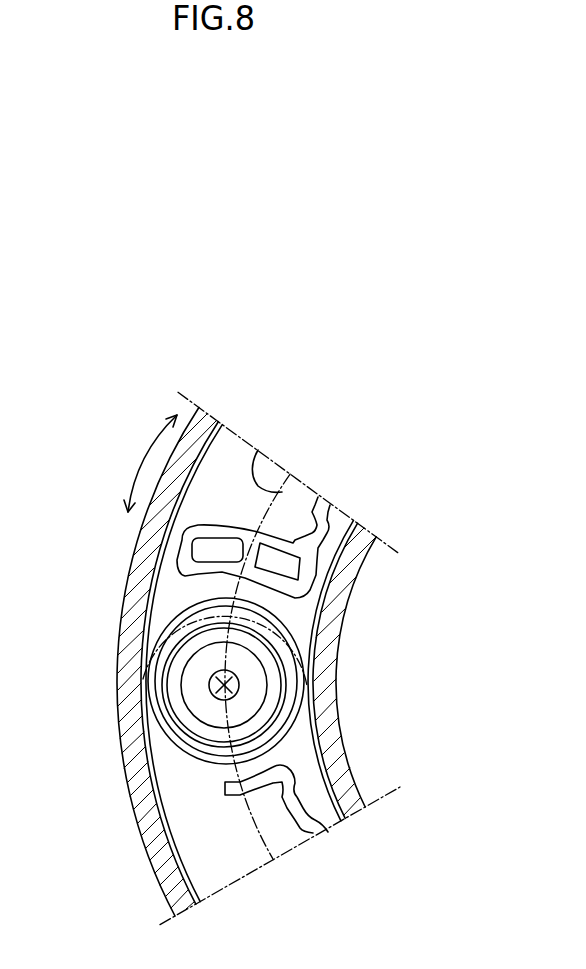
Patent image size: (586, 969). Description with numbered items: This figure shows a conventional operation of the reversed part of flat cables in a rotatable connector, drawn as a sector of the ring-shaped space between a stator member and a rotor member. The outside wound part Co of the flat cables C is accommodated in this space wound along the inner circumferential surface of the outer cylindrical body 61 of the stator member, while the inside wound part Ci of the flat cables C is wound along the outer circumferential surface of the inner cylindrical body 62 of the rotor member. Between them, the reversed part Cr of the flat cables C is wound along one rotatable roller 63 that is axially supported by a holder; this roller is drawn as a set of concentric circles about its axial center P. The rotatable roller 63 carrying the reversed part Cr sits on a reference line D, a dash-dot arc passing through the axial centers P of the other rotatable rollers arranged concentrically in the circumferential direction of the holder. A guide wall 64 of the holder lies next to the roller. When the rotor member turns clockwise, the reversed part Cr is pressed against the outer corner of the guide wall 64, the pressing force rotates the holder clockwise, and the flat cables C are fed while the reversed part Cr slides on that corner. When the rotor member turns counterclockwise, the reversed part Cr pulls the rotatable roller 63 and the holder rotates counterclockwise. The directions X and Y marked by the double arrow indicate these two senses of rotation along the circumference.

The outer cylindrical body 61 is at (135, 817).
The inner cylindrical body 62 is at (343, 745).
The rotatable roller 63 is at (152, 688).
The guide wall 64 is at (183, 550).
The flat cables C is at (153, 632).
The reversed part Cr is at (190, 590).
The inside wound part Ci is at (315, 717).
The outside wound part Co is at (146, 737).
The reference line D is at (259, 449).
The axial center P is at (226, 685).
The X direction X is at (152, 457).
The Y direction Y is at (119, 509).